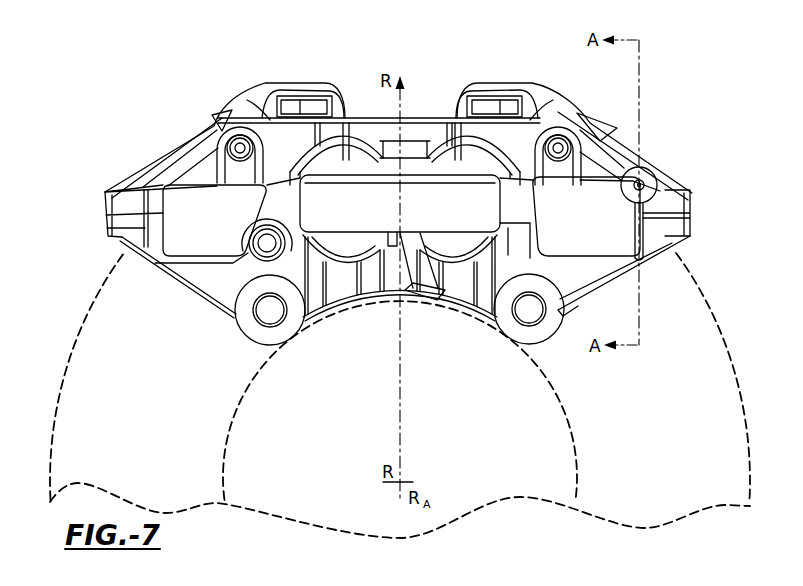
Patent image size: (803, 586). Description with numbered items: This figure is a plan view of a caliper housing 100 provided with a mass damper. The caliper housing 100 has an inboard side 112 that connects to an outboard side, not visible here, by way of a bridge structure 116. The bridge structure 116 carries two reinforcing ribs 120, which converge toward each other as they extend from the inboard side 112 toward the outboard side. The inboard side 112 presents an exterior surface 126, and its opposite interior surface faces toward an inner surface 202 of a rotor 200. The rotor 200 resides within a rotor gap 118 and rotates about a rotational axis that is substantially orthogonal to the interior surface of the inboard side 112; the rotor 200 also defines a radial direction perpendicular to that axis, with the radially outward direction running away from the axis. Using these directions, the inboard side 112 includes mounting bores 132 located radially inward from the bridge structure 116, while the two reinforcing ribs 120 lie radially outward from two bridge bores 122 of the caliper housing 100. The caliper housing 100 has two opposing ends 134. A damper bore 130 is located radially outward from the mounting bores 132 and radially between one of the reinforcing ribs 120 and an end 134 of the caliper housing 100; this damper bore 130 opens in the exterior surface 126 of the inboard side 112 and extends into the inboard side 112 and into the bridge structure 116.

The caliper housing 100 is at (112, 90).
The inboard side 112 is at (183, 276).
The bridge structure 116 is at (248, 80).
The rotor gap 118 is at (374, 104).
The reinforcing ribs 120 is at (300, 95).
The bridge bores 122 is at (235, 148).
The exterior surface 126 is at (339, 206).
The damper bore 130 is at (647, 173).
The mounting bores 132 is at (272, 310).
The opposing ends 134 is at (101, 217).
The rotor 200 is at (86, 358).
The inner surface 202 is at (76, 408).